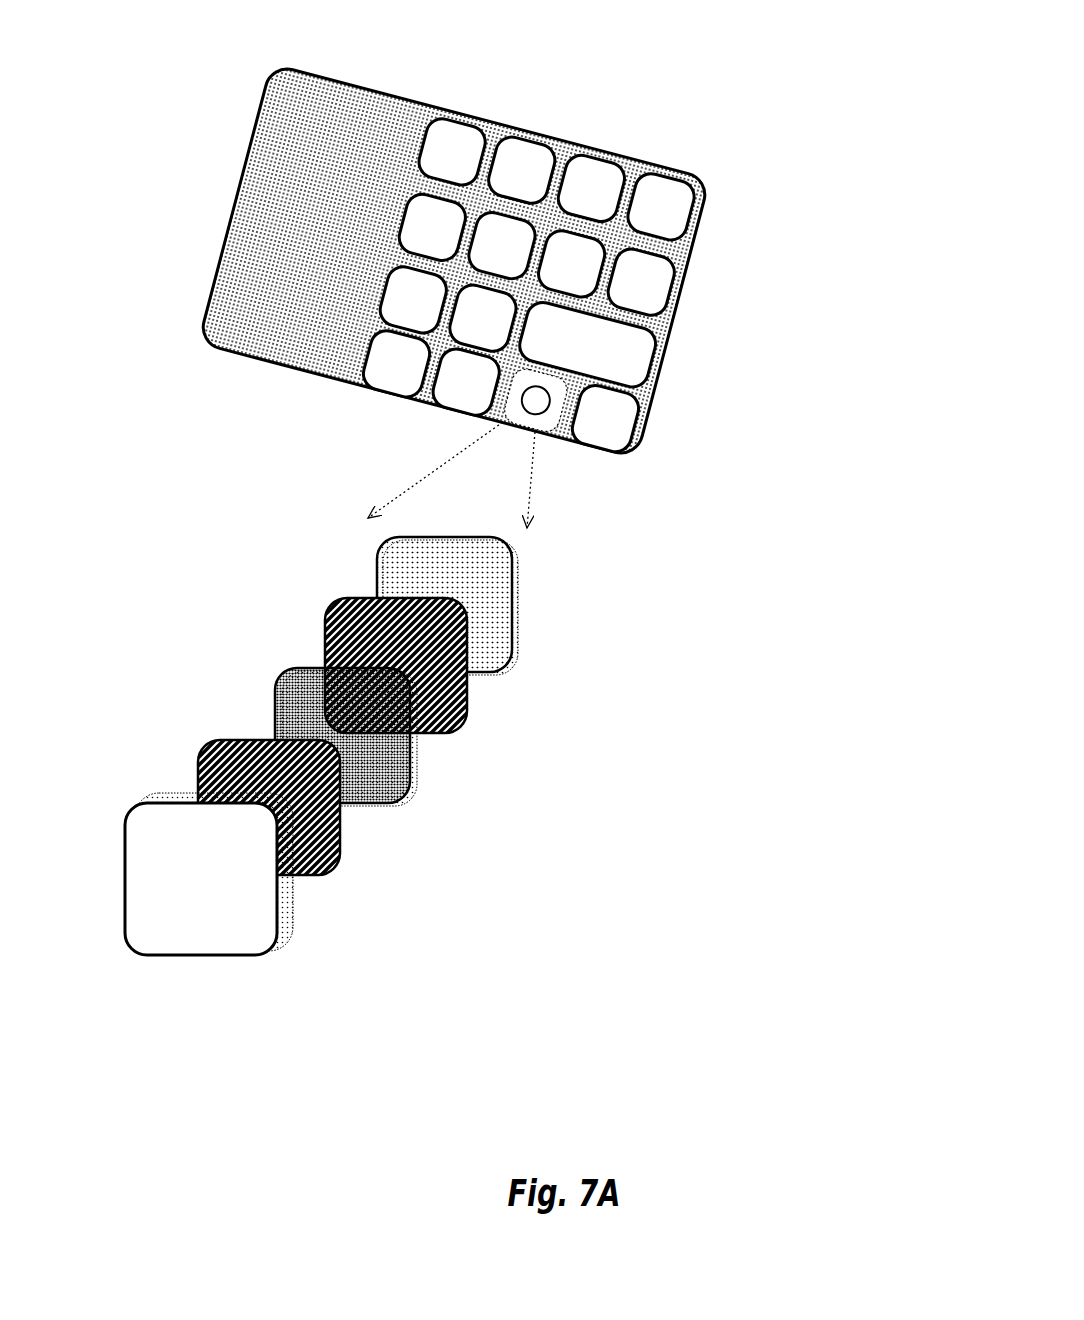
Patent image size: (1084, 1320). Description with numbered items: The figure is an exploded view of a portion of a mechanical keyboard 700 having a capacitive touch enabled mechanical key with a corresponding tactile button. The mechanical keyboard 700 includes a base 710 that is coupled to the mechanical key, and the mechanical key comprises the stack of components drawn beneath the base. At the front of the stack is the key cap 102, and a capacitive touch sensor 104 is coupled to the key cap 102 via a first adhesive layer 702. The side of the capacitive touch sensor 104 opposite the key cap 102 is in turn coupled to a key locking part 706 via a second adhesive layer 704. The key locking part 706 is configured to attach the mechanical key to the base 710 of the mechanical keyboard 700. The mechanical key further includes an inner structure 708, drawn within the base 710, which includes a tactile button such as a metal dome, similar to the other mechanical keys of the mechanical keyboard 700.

The mechanical keyboard 700 is at (536, 275).
The base 710 is at (692, 250).
The inner structure 708 is at (563, 384).
The key locking part 706 is at (520, 558).
The second adhesive layer 704 is at (470, 640).
The capacitive touch sensor 104 is at (413, 777).
The first adhesive layer 702 is at (343, 848).
The key cap 102 is at (242, 957).